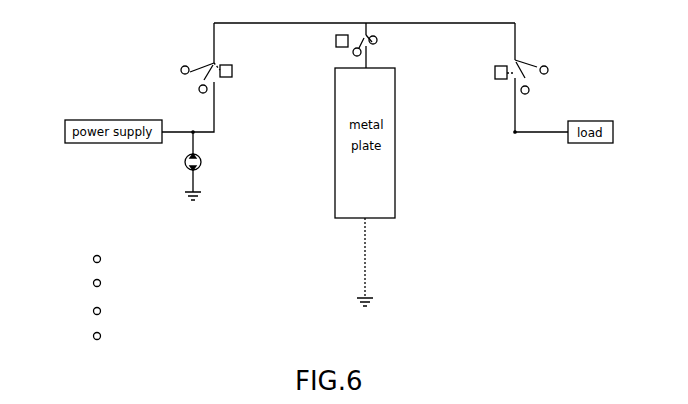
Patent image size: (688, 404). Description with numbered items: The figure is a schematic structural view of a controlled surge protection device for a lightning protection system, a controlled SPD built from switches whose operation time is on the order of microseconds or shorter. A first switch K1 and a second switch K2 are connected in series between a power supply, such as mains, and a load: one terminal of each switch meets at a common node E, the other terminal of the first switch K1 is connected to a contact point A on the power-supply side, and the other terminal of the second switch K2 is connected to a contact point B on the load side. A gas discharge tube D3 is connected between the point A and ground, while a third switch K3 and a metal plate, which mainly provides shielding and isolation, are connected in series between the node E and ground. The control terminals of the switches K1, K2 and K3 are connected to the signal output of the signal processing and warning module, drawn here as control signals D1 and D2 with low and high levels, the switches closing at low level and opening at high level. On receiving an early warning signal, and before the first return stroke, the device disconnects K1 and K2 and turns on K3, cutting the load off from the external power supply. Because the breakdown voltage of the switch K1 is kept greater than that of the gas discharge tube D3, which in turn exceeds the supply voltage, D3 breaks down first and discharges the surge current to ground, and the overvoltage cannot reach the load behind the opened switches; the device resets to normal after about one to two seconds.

The node E is at (364, 13).
The contact point A is at (189, 124).
The contact point B is at (514, 142).
The first switch K1 is at (303, 197).
The second switch K2 is at (508, 72).
The third switch K3 is at (275, 323).
The first control signal D1 is at (495, 76).
The second control signal D2 is at (275, 323).
The gas discharge tube D3 is at (187, 171).